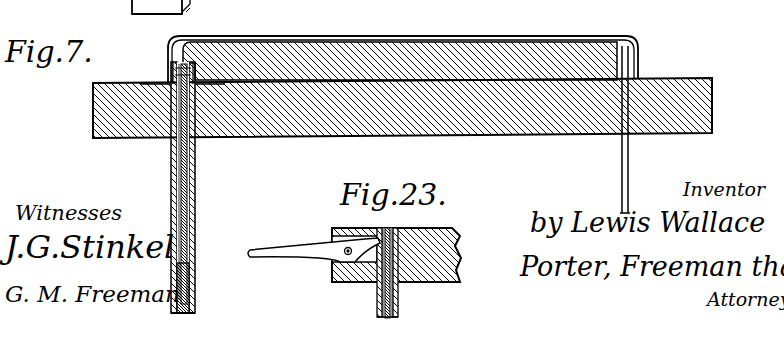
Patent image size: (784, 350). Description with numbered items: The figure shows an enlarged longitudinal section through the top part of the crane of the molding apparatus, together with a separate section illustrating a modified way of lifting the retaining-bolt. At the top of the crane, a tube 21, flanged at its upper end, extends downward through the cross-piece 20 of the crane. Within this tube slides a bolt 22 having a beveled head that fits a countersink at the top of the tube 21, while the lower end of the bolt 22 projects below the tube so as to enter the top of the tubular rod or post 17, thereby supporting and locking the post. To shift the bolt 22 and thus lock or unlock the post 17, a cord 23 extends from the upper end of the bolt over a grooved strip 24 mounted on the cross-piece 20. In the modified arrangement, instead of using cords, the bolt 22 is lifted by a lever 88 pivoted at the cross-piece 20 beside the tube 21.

In FIG. 7, the tubular rod or post 17 is at (196, 296).
In FIG. 7, the cross-piece 20 is at (703, 100).
In FIG. 23, the cross-piece 20 is at (460, 266).
In FIG. 7, the tube 21 is at (195, 210).
In FIG. 23, the tube 21 is at (398, 300).
In FIG. 7, the sliding bolt 22 is at (190, 172).
In FIG. 23, the sliding bolt 22 is at (386, 320).
In FIG. 7, the cord 23 is at (383, 30).
In FIG. 7, the grooved strip 24 is at (495, 52).
In FIG. 23, the lever 88 is at (286, 252).